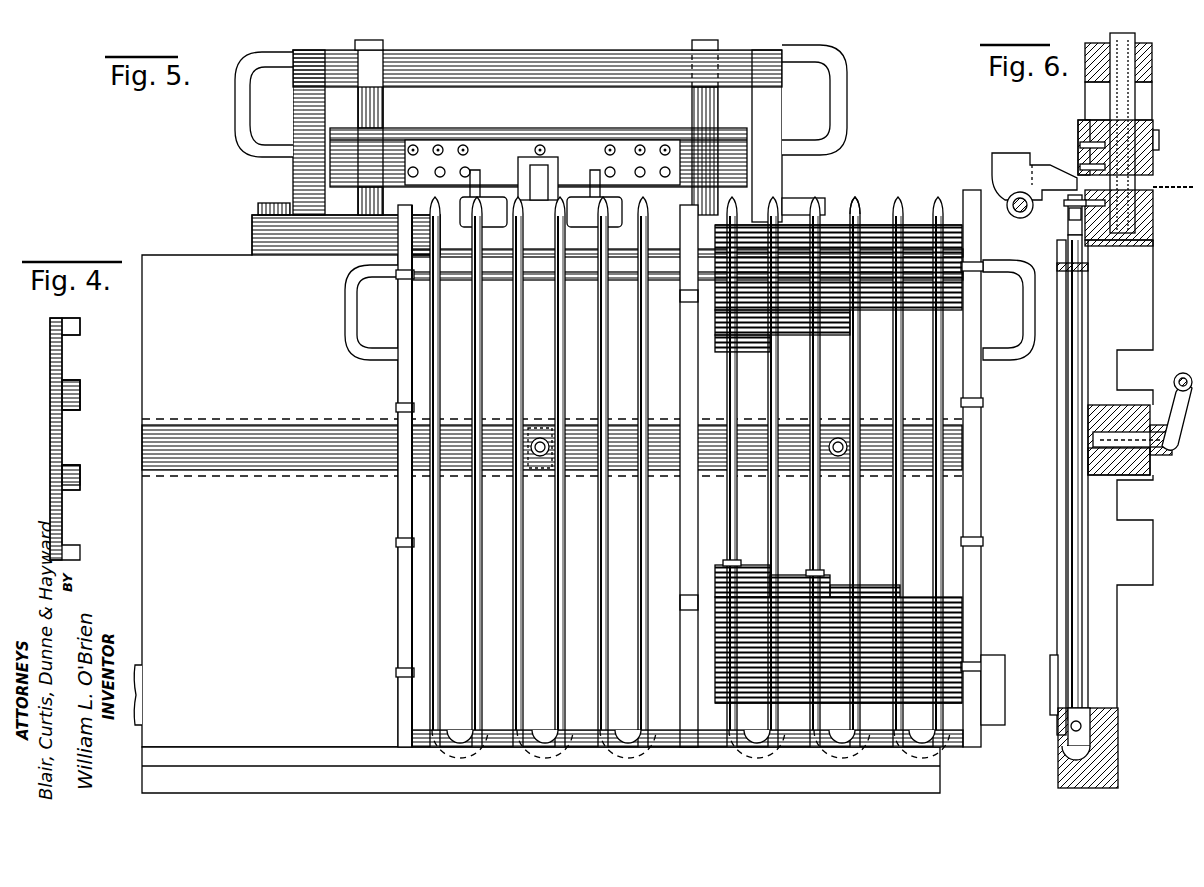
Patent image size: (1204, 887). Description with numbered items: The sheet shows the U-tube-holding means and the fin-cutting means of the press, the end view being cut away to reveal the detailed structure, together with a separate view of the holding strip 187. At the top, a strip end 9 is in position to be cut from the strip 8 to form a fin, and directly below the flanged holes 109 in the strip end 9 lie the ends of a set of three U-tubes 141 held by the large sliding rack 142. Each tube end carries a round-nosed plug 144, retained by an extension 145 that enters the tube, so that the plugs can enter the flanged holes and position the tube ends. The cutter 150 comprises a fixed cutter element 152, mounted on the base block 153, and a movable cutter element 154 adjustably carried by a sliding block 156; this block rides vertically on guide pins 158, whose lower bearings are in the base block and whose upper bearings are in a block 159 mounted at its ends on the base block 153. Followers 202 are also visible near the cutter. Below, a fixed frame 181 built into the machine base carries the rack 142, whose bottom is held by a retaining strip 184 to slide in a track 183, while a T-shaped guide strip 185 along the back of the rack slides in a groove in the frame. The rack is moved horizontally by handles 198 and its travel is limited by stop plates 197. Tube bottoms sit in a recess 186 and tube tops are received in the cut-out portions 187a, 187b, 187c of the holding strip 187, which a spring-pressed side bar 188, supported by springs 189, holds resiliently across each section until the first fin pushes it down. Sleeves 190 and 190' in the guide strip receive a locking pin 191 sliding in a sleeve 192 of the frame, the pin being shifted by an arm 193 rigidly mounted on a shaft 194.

In FIG. 6, the strip 8 is at (1172, 188).
In FIG. 5, the strip end 9 is at (918, 222).
In FIG. 6, the strip end 9 is at (1028, 202).
In FIG. 5, the flanged holes 109 is at (740, 562).
In FIG. 6, the flanged holes 109 is at (1103, 174).
In FIG. 5, the U-tubes 141 is at (520, 400).
In FIG. 6, the U-tubes 141 is at (1070, 511).
In FIG. 5, the sliding rack 142 is at (388, 502).
In FIG. 6, the sliding rack 142 is at (1049, 604).
In FIG. 5, the round-nosed plug 144 is at (856, 200).
In FIG. 6, the round-nosed plug 144 is at (1066, 202).
In FIG. 6, the extension 145 is at (1068, 215).
In FIG. 5, the cutter 150 is at (497, 51).
In FIG. 6, the cutter 150 is at (1075, 116).
In FIG. 5, the fixed cutter element 152 is at (540, 210).
In FIG. 6, the fixed cutter element 152 is at (1093, 246).
In FIG. 5, the base block 153 is at (348, 215).
In FIG. 6, the base block 153 is at (1153, 206).
In FIG. 5, the movable cutter element 154 is at (487, 150).
In FIG. 6, the movable cutter element 154 is at (1086, 160).
In FIG. 5, the sliding block 156 is at (680, 148).
In FIG. 6, the sliding block 156 is at (1155, 132).
In FIG. 5, the guide pins 158 is at (380, 112).
In FIG. 6, the guide pins 158 is at (1135, 100).
In FIG. 5, the block 159 is at (594, 72).
In FIG. 6, the block 159 is at (1150, 62).
In FIG. 5, the fixed frame 181 is at (192, 283).
In FIG. 6, the fixed frame 181 is at (1130, 545).
In FIG. 6, the track 183 is at (1060, 770).
In FIG. 5, the retaining strip 184 is at (222, 762).
In FIG. 6, the retaining strip 184 is at (1060, 755).
In FIG. 5, the guide strip 185 is at (628, 432).
In FIG. 6, the guide strip 185 is at (1085, 420).
In FIG. 5, the recess 186 is at (500, 737).
In FIG. 6, the recess 186 is at (1082, 726).
In FIG. 4, the holding strip 187 is at (58, 395).
In FIG. 5, the holding strip 187 is at (542, 270).
In FIG. 6, the holding strip 187 is at (1085, 272).
In FIG. 4, the cut-out portion 187a is at (70, 336).
In FIG. 4, the cut-out portion 187b is at (70, 410).
In FIG. 4, the cut-out portion 187c is at (70, 490).
In FIG. 5, the side bar 188 is at (410, 345).
In FIG. 5, the springs 189 is at (396, 284).
In FIG. 5, the sleeve 190 is at (546, 470).
In FIG. 6, the sleeve 190 is at (1095, 438).
In FIG. 5, the sleeve 190' is at (847, 468).
In FIG. 5, the locking pin 191 is at (544, 428).
In FIG. 6, the locking pin 191 is at (1123, 440).
In FIG. 6, the sleeve 192 is at (1141, 465).
In FIG. 6, the arm 193 is at (1183, 422).
In FIG. 6, the shaft 194 is at (1185, 372).
In FIG. 5, the stop plates 197 is at (135, 665).
In FIG. 6, the stop plates 197 is at (998, 668).
In FIG. 5, the handles 198 is at (345, 325).
In FIG. 5, the followers 202 is at (560, 170).
In FIG. 6, the followers 202 is at (1048, 165).